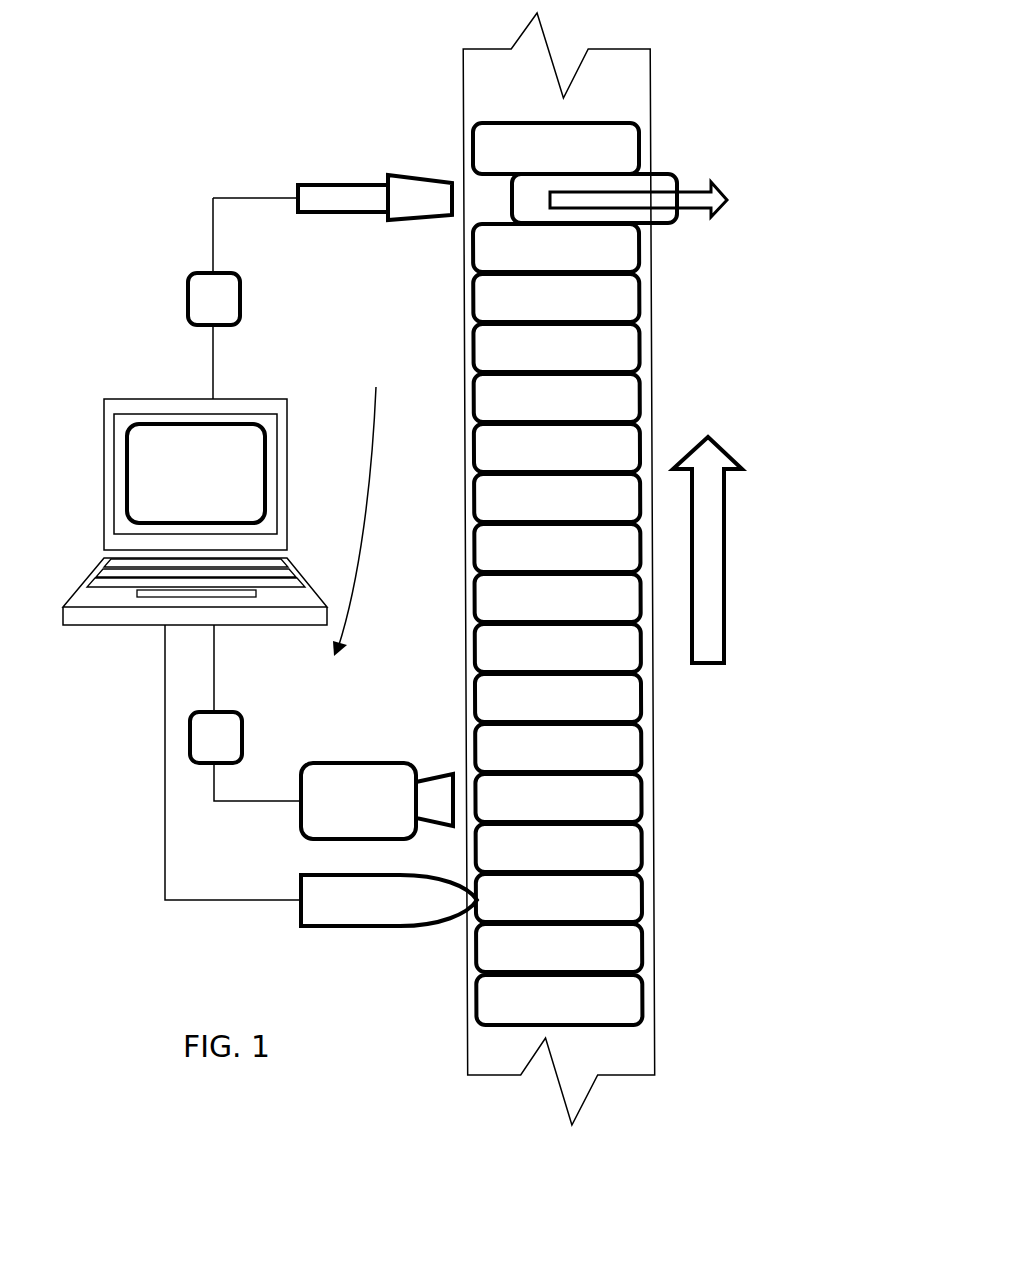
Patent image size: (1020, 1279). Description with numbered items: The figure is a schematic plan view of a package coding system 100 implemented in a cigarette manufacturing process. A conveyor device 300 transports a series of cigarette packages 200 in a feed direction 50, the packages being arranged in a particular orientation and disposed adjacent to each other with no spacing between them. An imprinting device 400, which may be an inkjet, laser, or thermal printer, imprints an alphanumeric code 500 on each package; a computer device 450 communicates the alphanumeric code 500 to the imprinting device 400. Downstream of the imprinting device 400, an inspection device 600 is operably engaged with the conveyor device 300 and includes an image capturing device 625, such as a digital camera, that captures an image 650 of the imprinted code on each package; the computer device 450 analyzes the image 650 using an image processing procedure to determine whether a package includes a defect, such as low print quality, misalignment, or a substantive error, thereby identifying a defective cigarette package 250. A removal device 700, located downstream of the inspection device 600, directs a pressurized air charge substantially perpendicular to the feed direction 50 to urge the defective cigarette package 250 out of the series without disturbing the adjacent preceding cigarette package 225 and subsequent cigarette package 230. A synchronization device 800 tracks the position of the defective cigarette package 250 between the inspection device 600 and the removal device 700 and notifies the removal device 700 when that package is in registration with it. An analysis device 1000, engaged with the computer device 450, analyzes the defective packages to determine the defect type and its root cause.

The package coding system 100 is at (212, 158).
The feed direction 50 is at (708, 612).
The cigarette packages 200 is at (490, 652).
The preceding cigarette package 225 is at (619, 249).
The subsequent cigarette package 230 is at (619, 150).
The defective cigarette package 250 is at (525, 198).
The conveyor device 300 is at (480, 1050).
The imprinting device 400 is at (342, 913).
The computer device 450 is at (285, 450).
The alphanumeric code 500 is at (237, 458).
The inspection device 600 is at (363, 508).
The image capturing device 625 is at (338, 788).
The image 650 is at (163, 437).
The removal device 700 is at (347, 207).
The synchronization device 800 is at (213, 298).
The analysis device 1000 is at (197, 738).